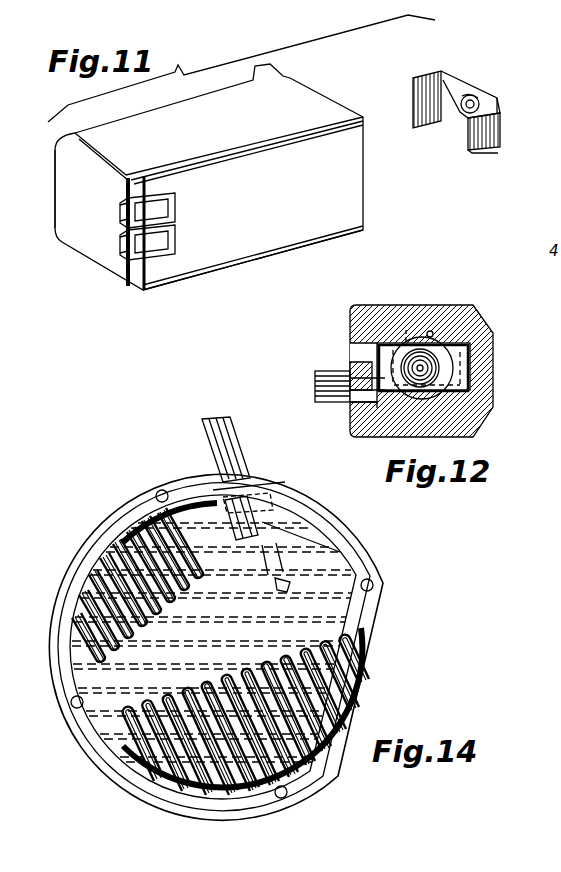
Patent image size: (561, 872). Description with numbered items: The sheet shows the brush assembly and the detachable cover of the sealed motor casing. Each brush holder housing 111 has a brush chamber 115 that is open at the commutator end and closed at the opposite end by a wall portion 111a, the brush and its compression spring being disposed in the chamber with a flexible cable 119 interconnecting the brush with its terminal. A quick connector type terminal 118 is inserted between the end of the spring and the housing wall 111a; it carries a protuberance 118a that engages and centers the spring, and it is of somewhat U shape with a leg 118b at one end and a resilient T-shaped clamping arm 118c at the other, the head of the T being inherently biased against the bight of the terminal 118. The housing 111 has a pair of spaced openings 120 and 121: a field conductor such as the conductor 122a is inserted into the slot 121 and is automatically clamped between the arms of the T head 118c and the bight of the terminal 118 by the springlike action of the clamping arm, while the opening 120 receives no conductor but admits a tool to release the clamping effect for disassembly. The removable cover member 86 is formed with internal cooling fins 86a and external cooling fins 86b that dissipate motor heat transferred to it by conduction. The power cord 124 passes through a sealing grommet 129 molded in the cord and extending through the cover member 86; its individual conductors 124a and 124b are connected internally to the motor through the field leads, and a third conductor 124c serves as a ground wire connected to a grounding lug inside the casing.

In FIG. 11, the housing 111 is at (250, 272).
In FIG. 12, the housing 111 is at (441, 307).
In FIG. 11, the wall portion 111a is at (58, 242).
In FIG. 12, the brush chamber 115 is at (432, 336).
In FIG. 11, the quick connector type terminal 118 is at (456, 100).
In FIG. 12, the quick connector type terminal 118 is at (487, 360).
In FIG. 11, the protuberance 118a is at (470, 94).
In FIG. 12, the protuberance 118a is at (445, 367).
In FIG. 11, the leg 118b is at (428, 72).
In FIG. 11, the T-shaped clamping arm 118c is at (466, 136).
In FIG. 12, the T-shaped clamping arm 118c is at (408, 330).
In FIG. 12, the flexible cable 119 is at (432, 374).
In FIG. 11, the opening 120 is at (150, 196).
In FIG. 12, the opening 120 is at (376, 312).
In FIG. 11, the slot 121 is at (152, 262).
In FIG. 12, the slot 121 is at (366, 420).
In FIG. 12, the electrical conductor 122a is at (316, 383).
In FIG. 14, the power cord 124 is at (232, 417).
In FIG. 14, the conductor 124a is at (262, 572).
In FIG. 14, the conductor 124b is at (330, 543).
In FIG. 14, the third conductor 124c is at (282, 590).
In FIG. 14, the sealing grommet 129 is at (277, 484).
In FIG. 14, the removable cover member 86 is at (345, 668).
In FIG. 14, the internal cooling fins 86a is at (100, 590).
In FIG. 14, the external cooling fins 86b is at (115, 755).